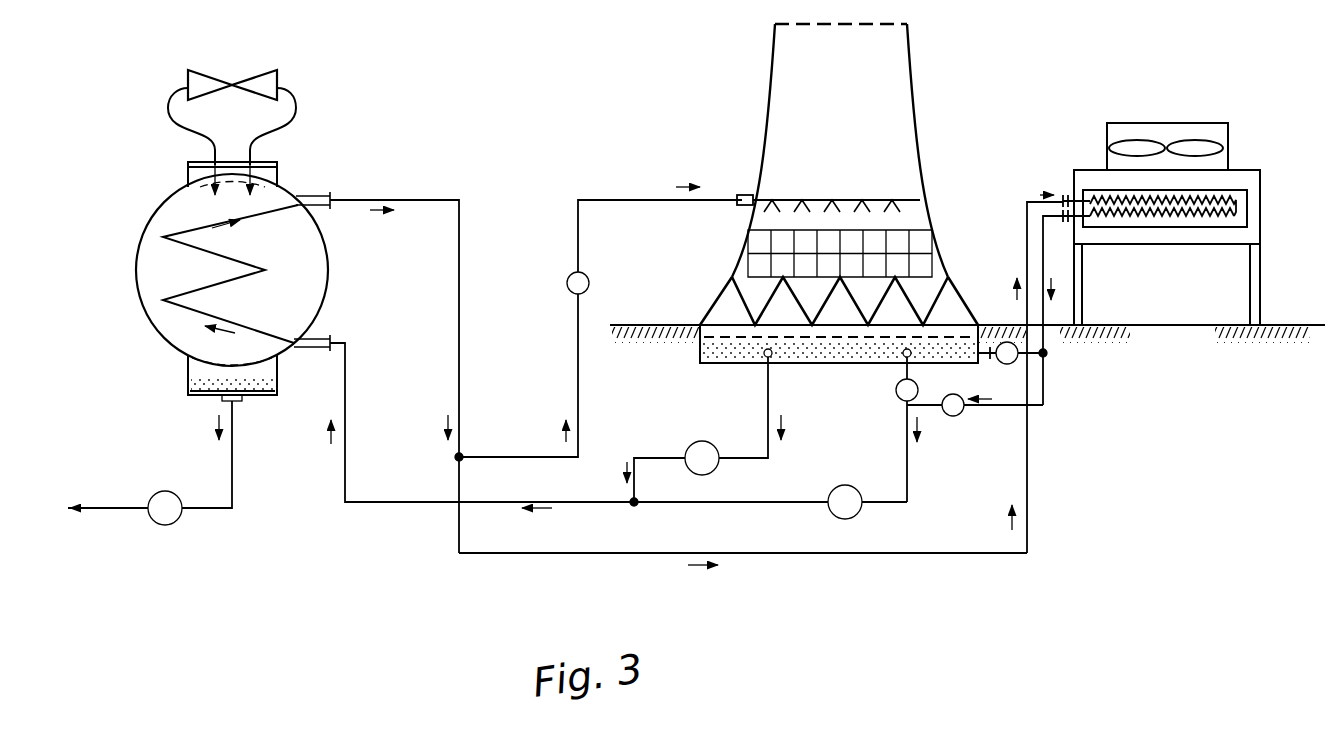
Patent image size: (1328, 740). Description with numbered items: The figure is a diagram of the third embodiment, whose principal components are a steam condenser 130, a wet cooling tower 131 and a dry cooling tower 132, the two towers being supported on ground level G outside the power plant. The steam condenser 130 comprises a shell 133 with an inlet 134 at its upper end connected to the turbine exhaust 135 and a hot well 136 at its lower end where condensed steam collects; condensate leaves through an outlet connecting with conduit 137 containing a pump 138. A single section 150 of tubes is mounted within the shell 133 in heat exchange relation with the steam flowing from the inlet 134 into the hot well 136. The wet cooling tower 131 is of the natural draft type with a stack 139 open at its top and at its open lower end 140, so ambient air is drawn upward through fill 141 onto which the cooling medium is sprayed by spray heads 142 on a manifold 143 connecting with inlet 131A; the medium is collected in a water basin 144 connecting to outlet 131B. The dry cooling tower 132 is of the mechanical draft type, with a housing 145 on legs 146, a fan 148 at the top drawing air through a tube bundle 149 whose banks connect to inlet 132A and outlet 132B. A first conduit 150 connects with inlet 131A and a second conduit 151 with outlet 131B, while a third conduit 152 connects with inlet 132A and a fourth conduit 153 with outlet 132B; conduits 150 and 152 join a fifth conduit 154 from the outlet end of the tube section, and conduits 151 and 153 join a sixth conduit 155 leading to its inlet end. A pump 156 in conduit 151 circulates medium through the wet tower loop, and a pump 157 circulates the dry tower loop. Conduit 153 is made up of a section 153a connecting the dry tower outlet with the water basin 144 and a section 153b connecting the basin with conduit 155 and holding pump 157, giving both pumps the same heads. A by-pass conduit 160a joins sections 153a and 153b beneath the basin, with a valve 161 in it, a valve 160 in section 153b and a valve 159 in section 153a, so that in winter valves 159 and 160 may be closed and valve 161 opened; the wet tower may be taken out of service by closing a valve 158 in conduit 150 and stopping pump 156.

The steam condenser 130 is at (210, 225).
The wet cooling tower 131 is at (760, 116).
The inlet to the wet tower 131A is at (742, 198).
The outlet from the basin 131B is at (765, 362).
The dry cooling tower 132 is at (1145, 235).
The inlet to the dry tower 132A is at (1066, 196).
The outlet from the dry tower 132B is at (1063, 218).
The shell 133 is at (162, 210).
The inlet 134 is at (280, 165).
The turbine exhaust 135 is at (277, 78).
The hot well 136 is at (190, 387).
The conduit 137 is at (234, 470).
The pump 138 is at (153, 493).
The stack or chimney 139 is at (910, 55).
The open lower end 140 is at (722, 292).
The fill or packing 141 is at (747, 242).
The spray heads 142 is at (895, 213).
The manifold 143 is at (785, 198).
The water basin 144 is at (692, 362).
The housing 145 is at (1262, 198).
The legs 146 is at (1262, 296).
The fan 148 is at (1197, 142).
The tube bundle 149 is at (1162, 230).
The section of tubes / first conduit 150 is at (235, 322).
The second conduit 151 is at (770, 409).
The third conduit 152 is at (912, 556).
The fourth conduit 153 is at (1035, 198).
The conduit section 153a is at (994, 365).
The conduit section 153b is at (728, 506).
The fifth conduit 154 is at (432, 199).
The sixth conduit 155 is at (378, 504).
The pump 156 is at (698, 443).
The pump 157 is at (848, 486).
The valve 158 is at (566, 283).
The valve 159 is at (1018, 356).
The valve 160 is at (896, 391).
The by-pass conduit 160a is at (1043, 405).
The valve 161 is at (950, 416).
The ground level G is at (1312, 325).